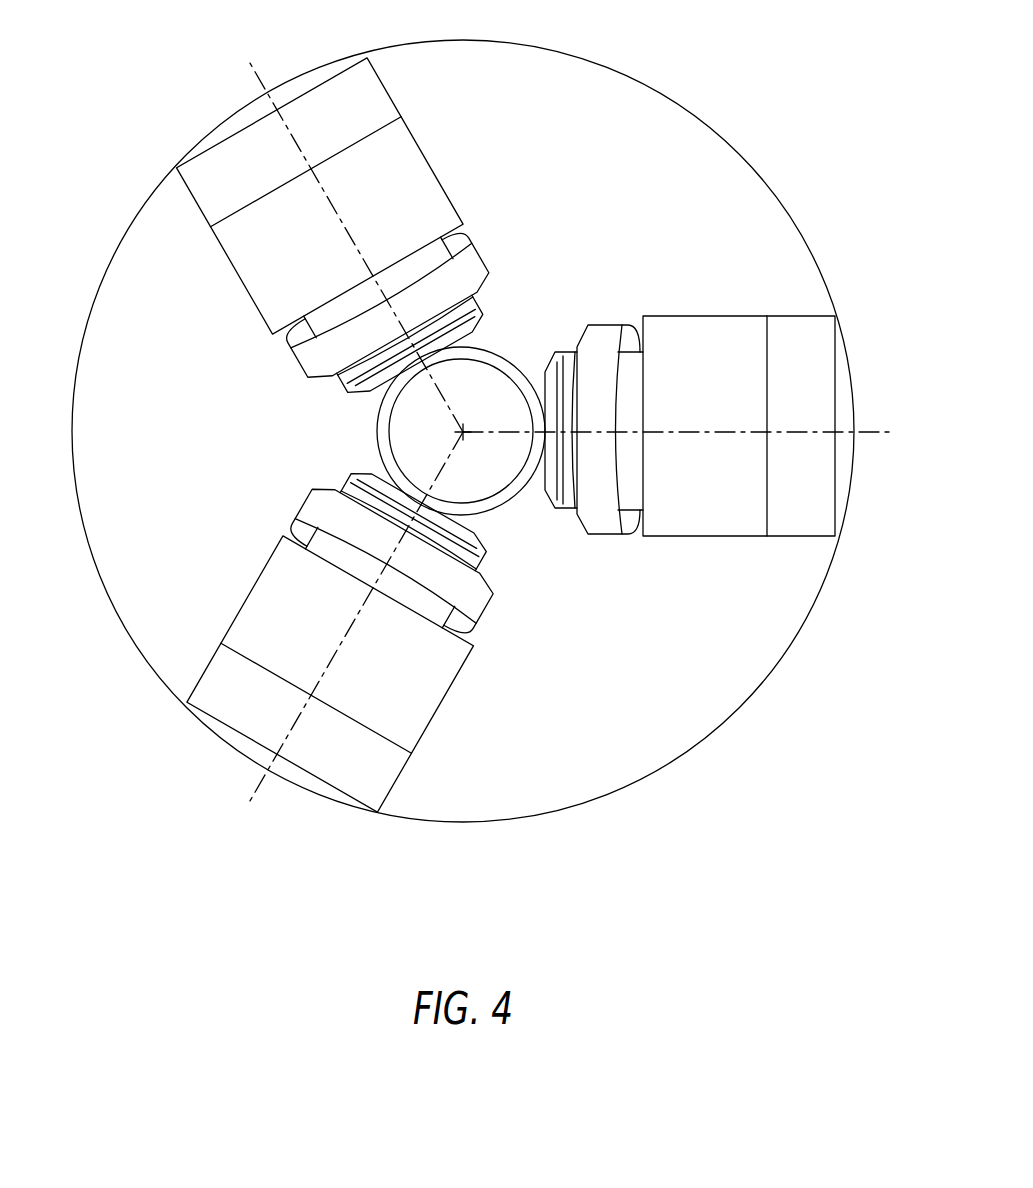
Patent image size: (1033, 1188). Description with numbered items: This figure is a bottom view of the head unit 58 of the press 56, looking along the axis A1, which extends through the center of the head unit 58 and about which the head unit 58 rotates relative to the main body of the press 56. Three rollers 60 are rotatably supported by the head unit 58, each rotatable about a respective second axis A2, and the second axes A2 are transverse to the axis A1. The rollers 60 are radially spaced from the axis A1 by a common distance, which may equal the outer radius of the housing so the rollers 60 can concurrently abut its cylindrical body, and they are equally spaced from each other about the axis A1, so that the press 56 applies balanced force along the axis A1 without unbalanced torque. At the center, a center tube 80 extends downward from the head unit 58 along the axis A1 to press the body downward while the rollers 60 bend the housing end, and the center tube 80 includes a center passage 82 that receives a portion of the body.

The press 56 is at (466, 418).
The head unit 58 is at (636, 126).
The rollers 60 is at (470, 268).
The center tube 80 is at (417, 472).
The center passage 82 is at (418, 421).
The axis A1 is at (467, 425).
The second axes A2 is at (342, 223).